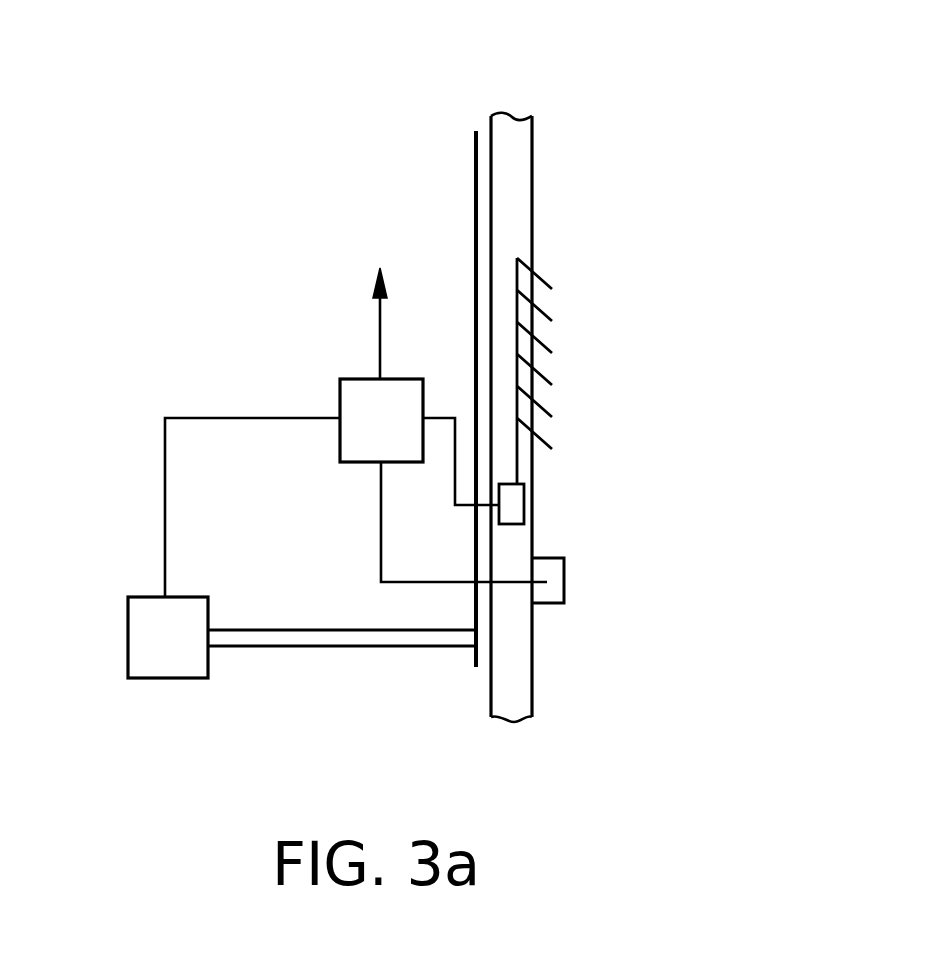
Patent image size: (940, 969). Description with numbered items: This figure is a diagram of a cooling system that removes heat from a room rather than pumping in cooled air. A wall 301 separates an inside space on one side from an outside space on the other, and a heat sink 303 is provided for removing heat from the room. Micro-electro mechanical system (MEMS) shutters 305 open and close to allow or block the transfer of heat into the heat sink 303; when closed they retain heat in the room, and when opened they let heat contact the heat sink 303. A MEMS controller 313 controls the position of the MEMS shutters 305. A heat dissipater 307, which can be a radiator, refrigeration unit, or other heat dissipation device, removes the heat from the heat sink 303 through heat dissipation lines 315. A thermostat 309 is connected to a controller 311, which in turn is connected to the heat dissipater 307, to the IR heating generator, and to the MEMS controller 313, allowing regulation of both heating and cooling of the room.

The wall 301 is at (509, 117).
The heat sink 303 is at (475, 657).
The MEMS shutters 305 is at (547, 268).
The heat dissipater 307 is at (191, 657).
The thermostat 309 is at (564, 567).
The controller 311 is at (406, 441).
The MEMS controller 313 is at (518, 498).
The heat dissipation lines 315 is at (303, 648).